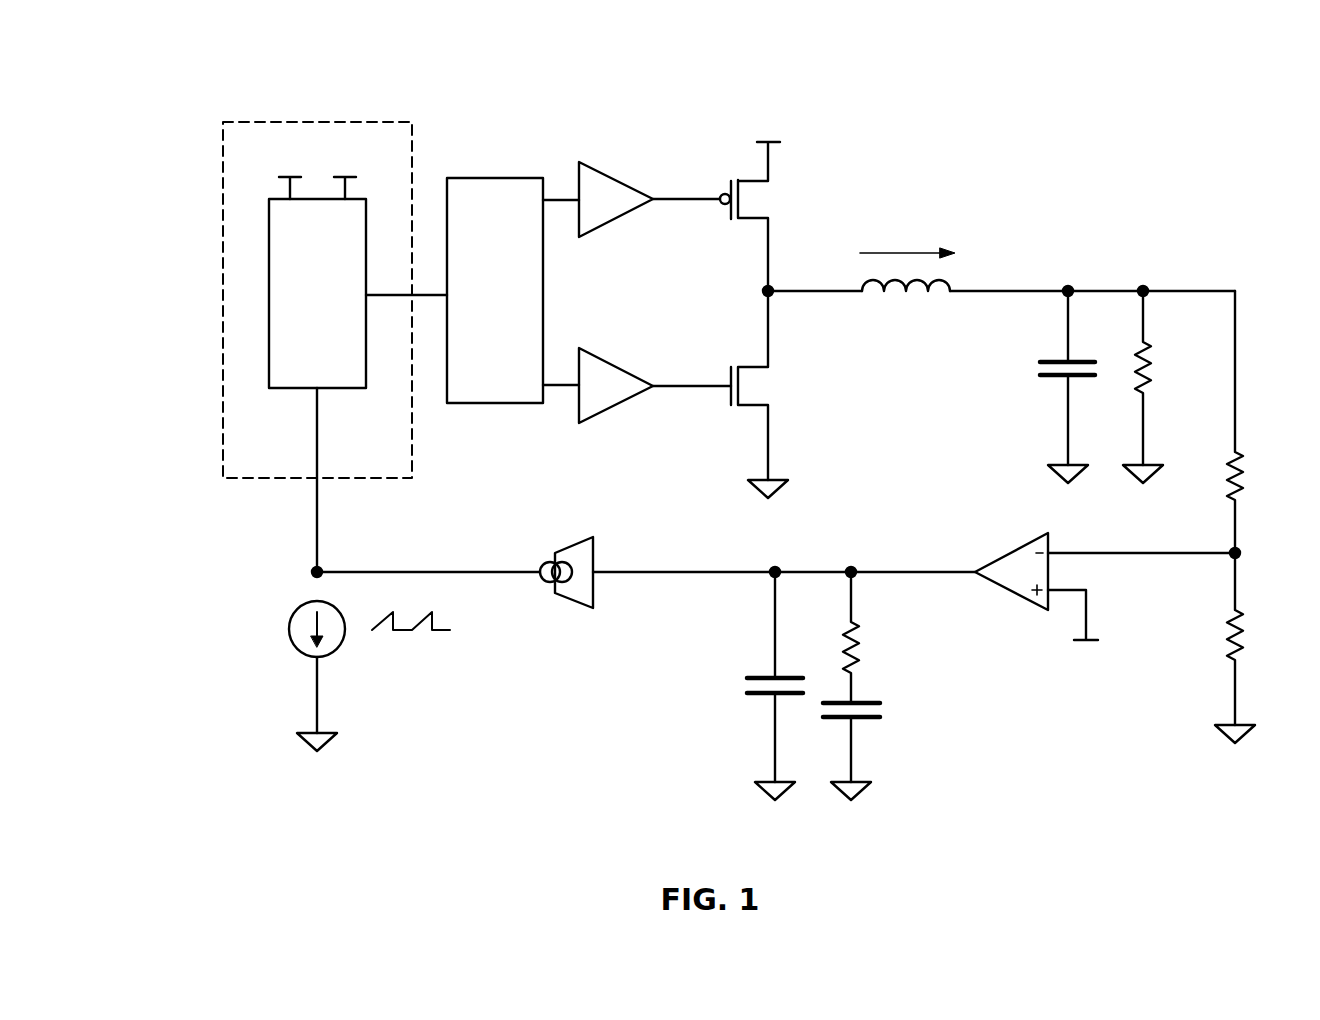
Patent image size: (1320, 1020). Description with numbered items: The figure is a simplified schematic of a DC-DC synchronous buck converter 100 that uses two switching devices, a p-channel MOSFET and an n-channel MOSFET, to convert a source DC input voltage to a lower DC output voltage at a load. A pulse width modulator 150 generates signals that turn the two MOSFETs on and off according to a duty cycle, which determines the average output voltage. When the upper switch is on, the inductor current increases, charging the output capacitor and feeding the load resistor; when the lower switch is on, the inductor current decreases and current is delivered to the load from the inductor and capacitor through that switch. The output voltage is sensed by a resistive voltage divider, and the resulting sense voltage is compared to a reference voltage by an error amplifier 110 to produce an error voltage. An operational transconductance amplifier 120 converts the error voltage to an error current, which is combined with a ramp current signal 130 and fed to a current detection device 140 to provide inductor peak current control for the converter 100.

The DC-DC synchronous buck converter 100 is at (195, 76).
The error amplifier 110 is at (1016, 547).
The operational transconductance amplifier 120 is at (570, 540).
The ramp current signal 130 is at (300, 600).
The current detection device 140 is at (358, 357).
The pulse width modulator 150 is at (513, 290).